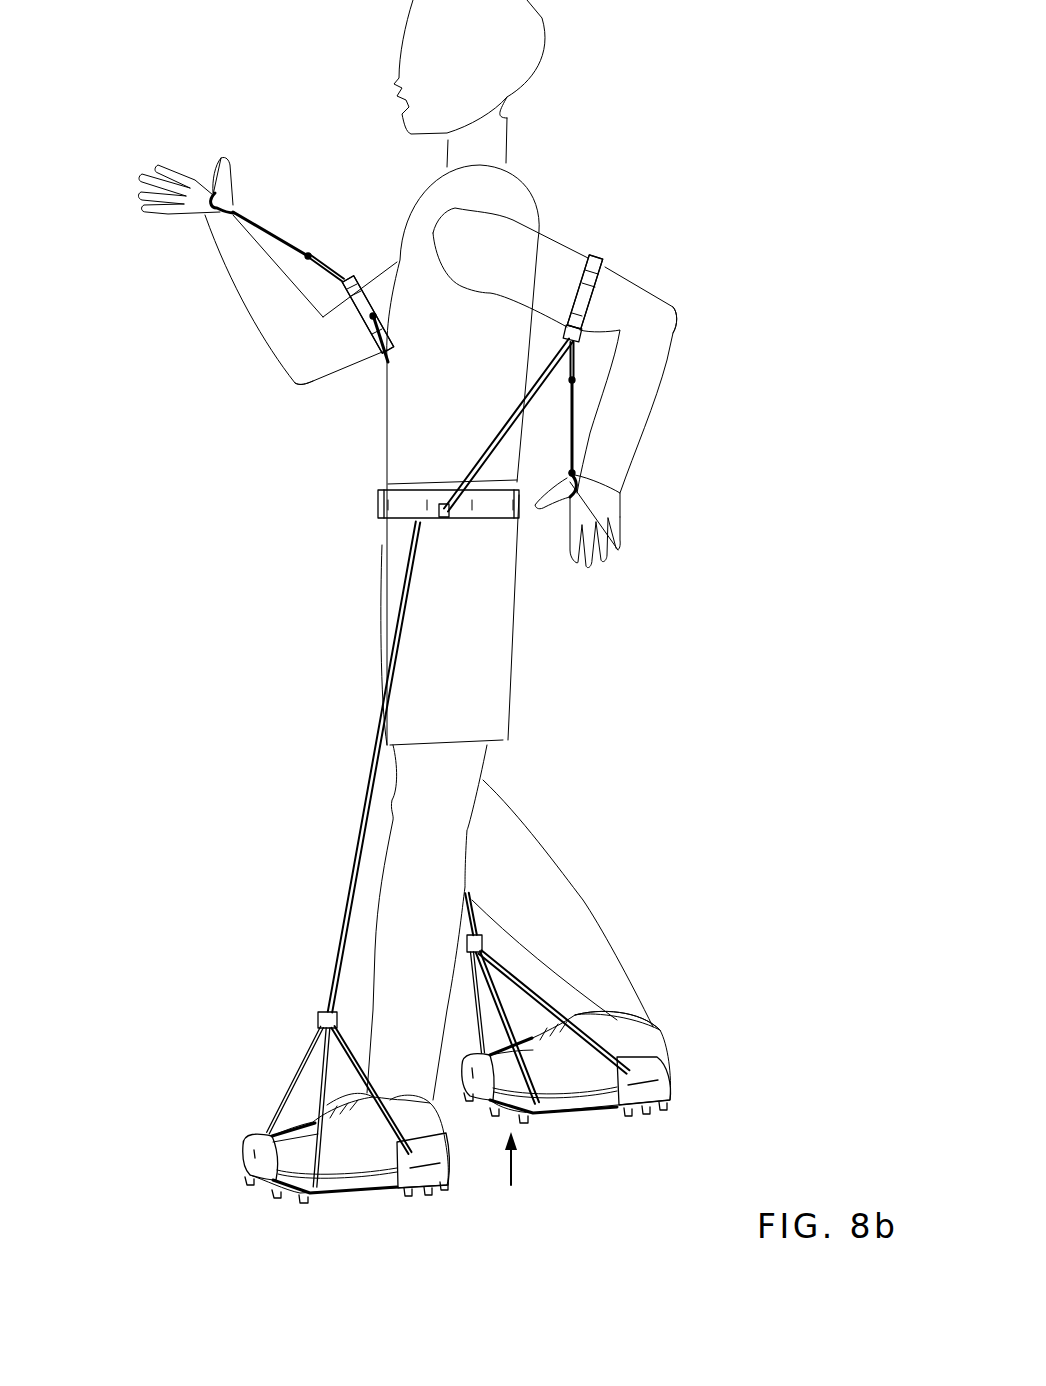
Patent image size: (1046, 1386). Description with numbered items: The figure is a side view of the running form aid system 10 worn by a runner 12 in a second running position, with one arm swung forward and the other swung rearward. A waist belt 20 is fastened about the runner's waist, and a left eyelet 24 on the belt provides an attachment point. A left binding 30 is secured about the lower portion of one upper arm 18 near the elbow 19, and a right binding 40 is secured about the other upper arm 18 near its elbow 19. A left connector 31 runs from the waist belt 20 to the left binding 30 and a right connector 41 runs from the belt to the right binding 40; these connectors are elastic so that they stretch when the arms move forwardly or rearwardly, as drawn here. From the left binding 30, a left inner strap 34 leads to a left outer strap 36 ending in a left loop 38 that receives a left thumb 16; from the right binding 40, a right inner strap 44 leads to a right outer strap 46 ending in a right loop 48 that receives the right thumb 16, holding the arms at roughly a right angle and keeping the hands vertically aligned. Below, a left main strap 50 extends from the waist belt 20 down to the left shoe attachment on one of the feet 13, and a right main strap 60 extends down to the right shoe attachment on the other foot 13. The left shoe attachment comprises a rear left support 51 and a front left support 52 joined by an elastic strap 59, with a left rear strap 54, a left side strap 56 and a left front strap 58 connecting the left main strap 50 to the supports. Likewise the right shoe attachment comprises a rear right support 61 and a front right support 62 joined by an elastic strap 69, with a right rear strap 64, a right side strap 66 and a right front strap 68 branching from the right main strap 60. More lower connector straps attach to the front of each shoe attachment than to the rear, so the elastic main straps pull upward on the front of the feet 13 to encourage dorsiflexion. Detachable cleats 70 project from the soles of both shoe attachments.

The running form aid system 10 is at (180, 83).
The runner 12 is at (532, 190).
The feet 13 is at (657, 1028).
The thumb 16 is at (218, 164).
The upper arm 18 is at (382, 273).
The elbow 19 is at (313, 383).
The waist belt 20 is at (408, 532).
The left eyelet 24 is at (455, 530).
The left binding 30 is at (607, 253).
The left connector 31 is at (483, 437).
The left inner strap 34 is at (573, 358).
The left outer strap 36 is at (573, 428).
The left loop 38 is at (575, 482).
The right binding 40 is at (360, 310).
The right connector 41 is at (383, 363).
The right inner strap 44 is at (337, 277).
The right outer strap 46 is at (255, 218).
The right loop 48 is at (215, 205).
The left main strap 50 is at (366, 792).
The rear left support 51 is at (428, 1190).
The front left support 52 is at (245, 1142).
The left rear strap 54 is at (320, 1063).
The left side strap 56 is at (318, 1087).
The left front strap 58 is at (303, 1100).
The elastic strap 59 is at (345, 1190).
The right main strap 60 is at (470, 920).
The rear right support 61 is at (672, 1060).
The front right support 62 is at (470, 1095).
The right rear strap 64 is at (540, 980).
The right side strap 66 is at (543, 1067).
The right front strap 68 is at (478, 1016).
The elastic strap 69 is at (555, 1110).
The cleats 70 is at (275, 1190).